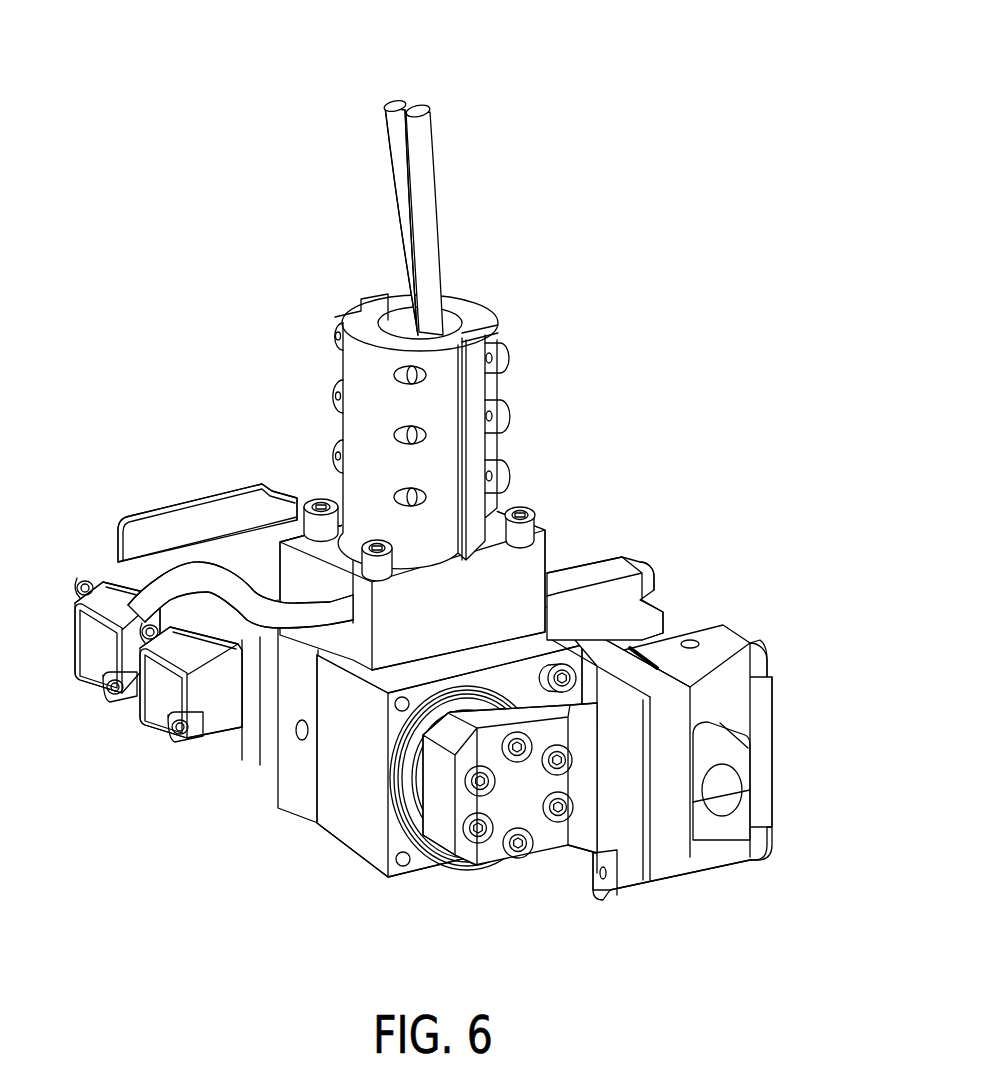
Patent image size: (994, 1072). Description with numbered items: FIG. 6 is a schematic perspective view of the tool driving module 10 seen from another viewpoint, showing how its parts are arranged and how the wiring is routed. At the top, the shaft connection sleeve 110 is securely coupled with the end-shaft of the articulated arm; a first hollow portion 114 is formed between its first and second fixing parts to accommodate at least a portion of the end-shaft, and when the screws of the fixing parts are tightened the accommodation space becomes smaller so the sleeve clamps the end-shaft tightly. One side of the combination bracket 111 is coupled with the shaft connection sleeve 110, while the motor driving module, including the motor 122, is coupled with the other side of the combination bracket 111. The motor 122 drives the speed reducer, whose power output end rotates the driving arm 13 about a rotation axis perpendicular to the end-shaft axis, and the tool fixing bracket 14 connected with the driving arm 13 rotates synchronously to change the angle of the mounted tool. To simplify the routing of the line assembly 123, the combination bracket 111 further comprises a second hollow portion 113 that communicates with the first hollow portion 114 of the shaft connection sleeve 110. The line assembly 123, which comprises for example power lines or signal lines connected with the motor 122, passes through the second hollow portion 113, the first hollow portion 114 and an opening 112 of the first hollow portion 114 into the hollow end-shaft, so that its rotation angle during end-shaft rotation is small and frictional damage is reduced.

The tool driving module 10 is at (764, 44).
The driving arm 13 is at (542, 830).
The tool fixing bracket 14 is at (750, 718).
The shaft connection sleeve 110 is at (478, 453).
The combination bracket 111 is at (523, 585).
The opening 112 is at (445, 318).
The second hollow portion 113 is at (285, 585).
The first hollow portion 114 is at (393, 322).
The motor 122 is at (190, 525).
The line assembly 123 is at (157, 590).